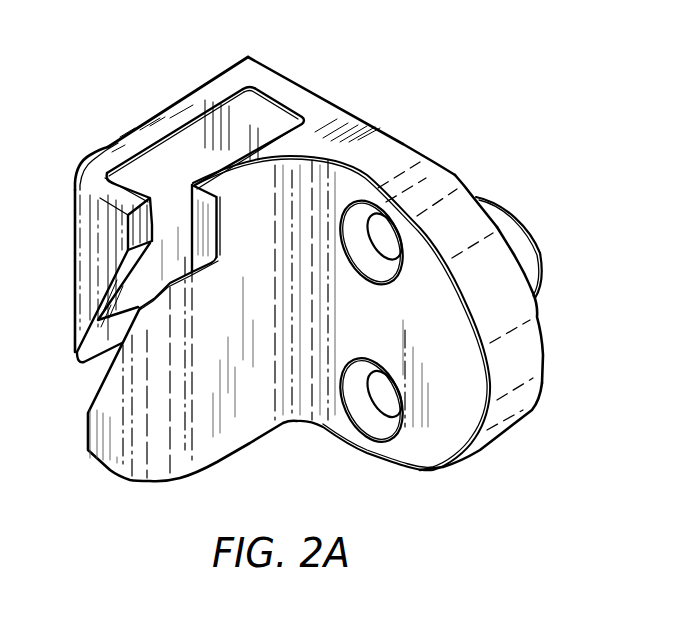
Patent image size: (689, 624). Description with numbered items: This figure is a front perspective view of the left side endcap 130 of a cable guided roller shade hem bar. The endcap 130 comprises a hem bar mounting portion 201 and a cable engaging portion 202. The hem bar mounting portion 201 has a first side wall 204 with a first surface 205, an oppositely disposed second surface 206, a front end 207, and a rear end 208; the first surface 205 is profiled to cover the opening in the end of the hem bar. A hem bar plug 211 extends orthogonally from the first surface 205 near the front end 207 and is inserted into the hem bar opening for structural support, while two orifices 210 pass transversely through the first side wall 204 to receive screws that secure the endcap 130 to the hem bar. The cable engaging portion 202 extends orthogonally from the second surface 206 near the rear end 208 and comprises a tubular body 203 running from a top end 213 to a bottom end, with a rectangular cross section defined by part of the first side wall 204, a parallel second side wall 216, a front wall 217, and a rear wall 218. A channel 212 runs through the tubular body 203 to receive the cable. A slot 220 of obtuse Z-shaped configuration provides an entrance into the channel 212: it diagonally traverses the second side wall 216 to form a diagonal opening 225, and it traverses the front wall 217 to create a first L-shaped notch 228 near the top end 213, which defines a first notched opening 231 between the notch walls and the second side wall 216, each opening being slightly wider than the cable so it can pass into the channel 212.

The endcap 130 is at (570, 54).
The hem bar mounting portion 201 is at (455, 175).
The cable engaging portion 202 is at (77, 170).
The tubular body 203 is at (148, 116).
The first side wall 204 is at (404, 144).
The first surface 205 is at (545, 352).
The second surface 206 is at (422, 457).
The front end 207 is at (518, 395).
The rear end 208 is at (237, 58).
The orifices 210 is at (383, 263).
The hem bar plug 211 is at (522, 214).
The channel 212 is at (147, 167).
The top end 213 is at (200, 97).
The second side wall 216 is at (100, 282).
The front wall 217 is at (235, 429).
The rear wall 218 is at (152, 127).
The slot 220 is at (82, 350).
The diagonal opening 225 is at (88, 320).
The first L-shaped notch 228 is at (207, 235).
The first notched opening 231 is at (173, 235).